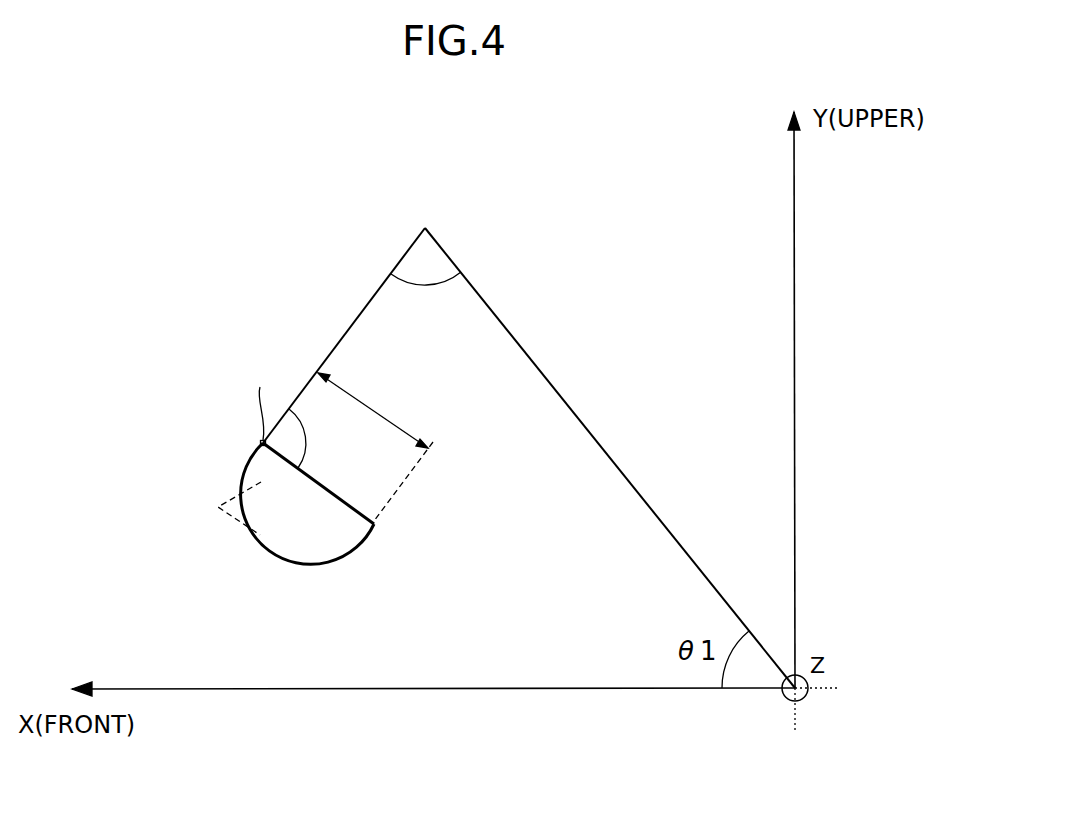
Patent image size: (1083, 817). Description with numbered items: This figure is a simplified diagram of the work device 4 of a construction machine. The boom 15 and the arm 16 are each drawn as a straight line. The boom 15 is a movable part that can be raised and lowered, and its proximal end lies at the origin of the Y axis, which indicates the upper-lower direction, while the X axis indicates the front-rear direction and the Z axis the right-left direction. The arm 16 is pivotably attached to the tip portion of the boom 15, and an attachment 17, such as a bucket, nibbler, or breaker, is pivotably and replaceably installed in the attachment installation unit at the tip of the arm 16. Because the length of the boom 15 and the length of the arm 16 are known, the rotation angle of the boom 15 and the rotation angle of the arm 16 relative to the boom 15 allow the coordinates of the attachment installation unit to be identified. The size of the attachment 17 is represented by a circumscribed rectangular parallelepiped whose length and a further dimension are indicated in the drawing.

The work device 4 is at (520, 208).
The boom 15 is at (508, 327).
The arm 16 is at (378, 288).
The attachment 17 is at (247, 473).